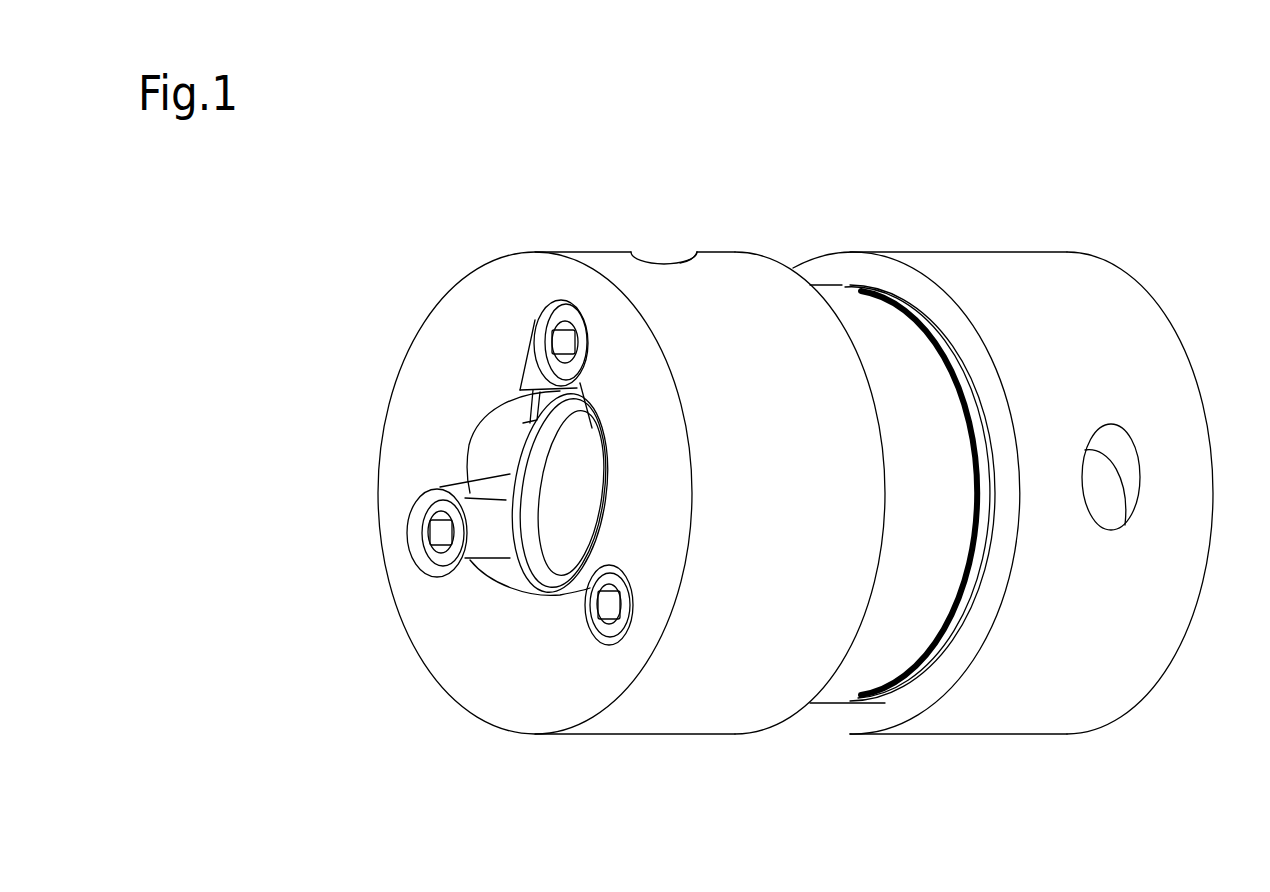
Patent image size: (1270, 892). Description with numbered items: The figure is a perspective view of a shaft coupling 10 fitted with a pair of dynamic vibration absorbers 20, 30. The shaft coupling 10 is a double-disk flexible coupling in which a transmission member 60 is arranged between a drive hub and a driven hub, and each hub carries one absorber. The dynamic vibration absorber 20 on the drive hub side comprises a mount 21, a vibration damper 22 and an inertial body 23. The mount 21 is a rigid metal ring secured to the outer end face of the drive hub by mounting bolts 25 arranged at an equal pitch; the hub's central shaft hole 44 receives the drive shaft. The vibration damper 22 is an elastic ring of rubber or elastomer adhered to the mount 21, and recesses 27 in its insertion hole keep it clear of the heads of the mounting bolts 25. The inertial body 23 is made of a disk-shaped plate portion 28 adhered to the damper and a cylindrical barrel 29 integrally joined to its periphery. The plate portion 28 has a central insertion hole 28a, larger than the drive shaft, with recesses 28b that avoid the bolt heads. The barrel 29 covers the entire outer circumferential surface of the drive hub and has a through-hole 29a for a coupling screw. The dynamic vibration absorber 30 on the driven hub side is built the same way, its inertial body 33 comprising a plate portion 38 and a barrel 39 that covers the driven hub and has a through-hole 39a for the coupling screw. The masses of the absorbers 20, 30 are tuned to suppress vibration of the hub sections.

The shaft coupling 10 is at (821, 243).
The dynamic vibration absorber 20 is at (733, 233).
The mount 21 is at (530, 555).
The vibration damper 22 is at (527, 443).
The inertial body 23 is at (655, 727).
The mounting bolts 25 is at (548, 338).
The recesses 27 is at (513, 497).
The plate portion 28 is at (497, 657).
The insertion hole 28a is at (518, 575).
The recesses 28b is at (533, 379).
The barrel 29 is at (708, 725).
The through-hole 29a is at (668, 257).
The dynamic vibration absorber 30 is at (976, 235).
The inertial body 33 is at (1035, 737).
The plate portion 38 is at (1180, 648).
The barrel 39 is at (1180, 574).
The through-hole 39a is at (1109, 435).
The shaft hole 44 is at (577, 447).
The transmission member 60 is at (832, 692).